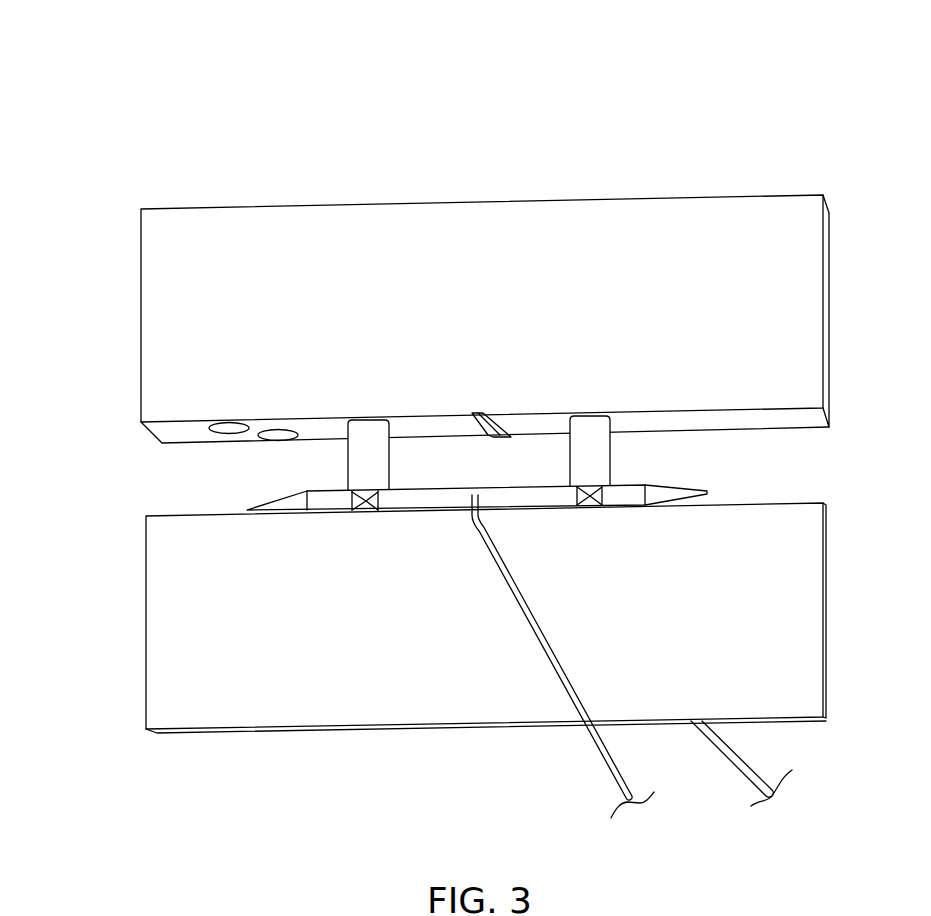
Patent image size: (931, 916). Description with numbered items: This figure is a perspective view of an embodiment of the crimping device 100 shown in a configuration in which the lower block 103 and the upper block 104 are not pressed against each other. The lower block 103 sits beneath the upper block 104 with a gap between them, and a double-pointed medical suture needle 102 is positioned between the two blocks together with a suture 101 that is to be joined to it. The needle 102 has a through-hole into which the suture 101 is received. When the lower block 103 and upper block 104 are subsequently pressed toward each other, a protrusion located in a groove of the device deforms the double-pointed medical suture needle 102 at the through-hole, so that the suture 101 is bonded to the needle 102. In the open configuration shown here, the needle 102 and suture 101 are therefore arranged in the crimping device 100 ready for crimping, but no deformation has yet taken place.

The crimping device 100 is at (435, 419).
The suture 101 is at (543, 662).
The double-pointed medical suture needle 102 is at (481, 658).
The lower block 103 is at (242, 700).
The upper block 104 is at (238, 247).